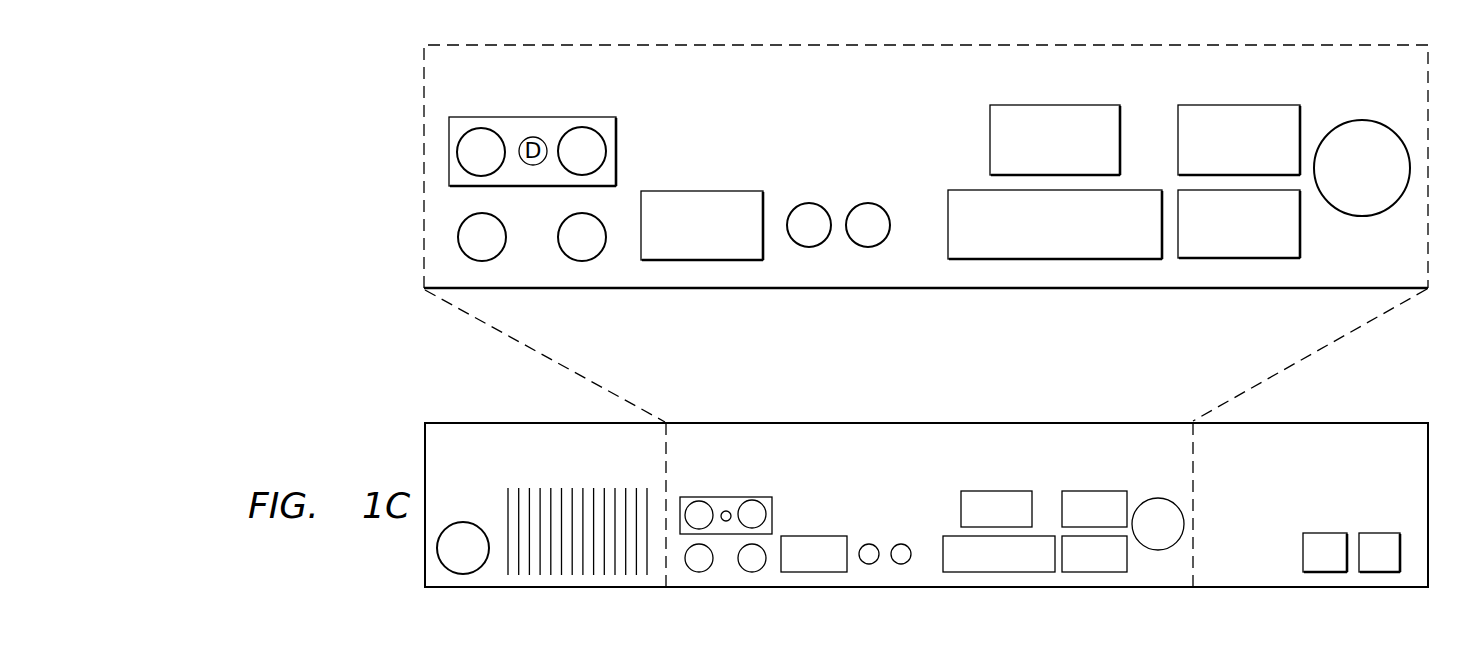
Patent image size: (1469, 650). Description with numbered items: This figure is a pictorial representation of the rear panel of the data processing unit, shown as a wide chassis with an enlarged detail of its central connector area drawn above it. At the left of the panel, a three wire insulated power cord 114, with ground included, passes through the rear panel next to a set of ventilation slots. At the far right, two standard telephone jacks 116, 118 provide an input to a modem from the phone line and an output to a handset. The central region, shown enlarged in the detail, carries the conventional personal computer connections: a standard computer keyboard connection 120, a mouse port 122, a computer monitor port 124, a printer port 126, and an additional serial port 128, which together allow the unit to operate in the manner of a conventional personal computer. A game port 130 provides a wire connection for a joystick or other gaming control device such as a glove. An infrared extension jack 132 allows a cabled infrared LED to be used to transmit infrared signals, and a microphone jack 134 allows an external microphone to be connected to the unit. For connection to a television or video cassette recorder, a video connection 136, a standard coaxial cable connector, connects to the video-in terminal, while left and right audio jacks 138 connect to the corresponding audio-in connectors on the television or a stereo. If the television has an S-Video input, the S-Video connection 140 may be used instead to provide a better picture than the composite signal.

The power cord 114 is at (465, 522).
The telephone jack 116 is at (1323, 533).
The telephone jack 118 is at (1380, 533).
The computer keyboard connection 120 is at (1362, 120).
The mouse port 122 is at (1238, 105).
The computer monitor port 124 is at (1055, 105).
The printer port 126 is at (960, 190).
The serial port 128 is at (1300, 240).
The game port 130 is at (700, 191).
The infrared extension jack 132 is at (811, 203).
The microphone jack 134 is at (866, 203).
The video connection 136 is at (582, 128).
The left and right audio jacks 138 is at (481, 128).
The S-Video connection 140 is at (565, 255).